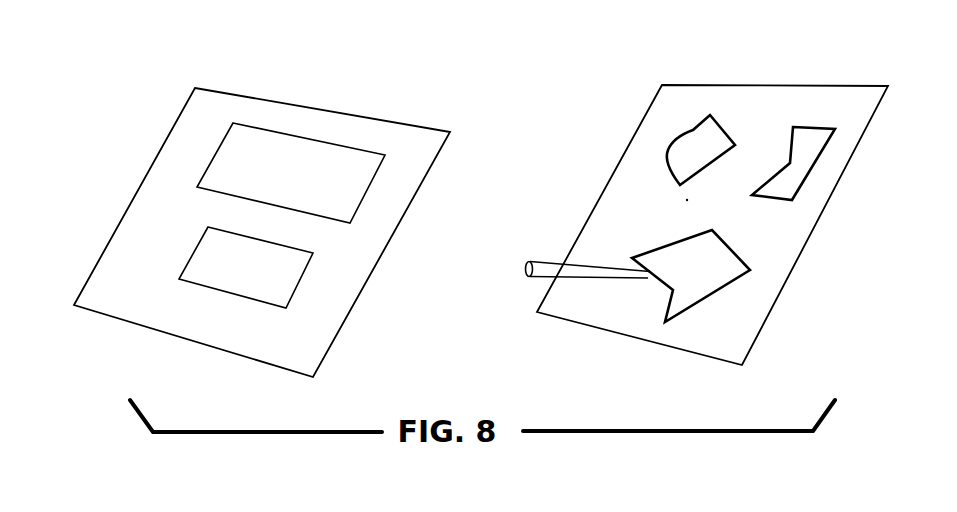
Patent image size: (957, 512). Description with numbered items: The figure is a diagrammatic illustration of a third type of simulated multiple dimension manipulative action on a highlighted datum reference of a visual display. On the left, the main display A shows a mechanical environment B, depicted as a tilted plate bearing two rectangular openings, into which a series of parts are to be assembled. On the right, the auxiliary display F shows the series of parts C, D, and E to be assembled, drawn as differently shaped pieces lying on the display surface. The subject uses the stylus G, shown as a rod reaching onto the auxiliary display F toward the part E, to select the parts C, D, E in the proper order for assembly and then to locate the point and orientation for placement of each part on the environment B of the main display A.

The main display A is at (328, 316).
The mechanical environment B is at (302, 157).
The part C is at (697, 137).
The part D is at (808, 152).
The part E is at (735, 252).
The auxiliary display F is at (742, 318).
The stylus G is at (556, 267).